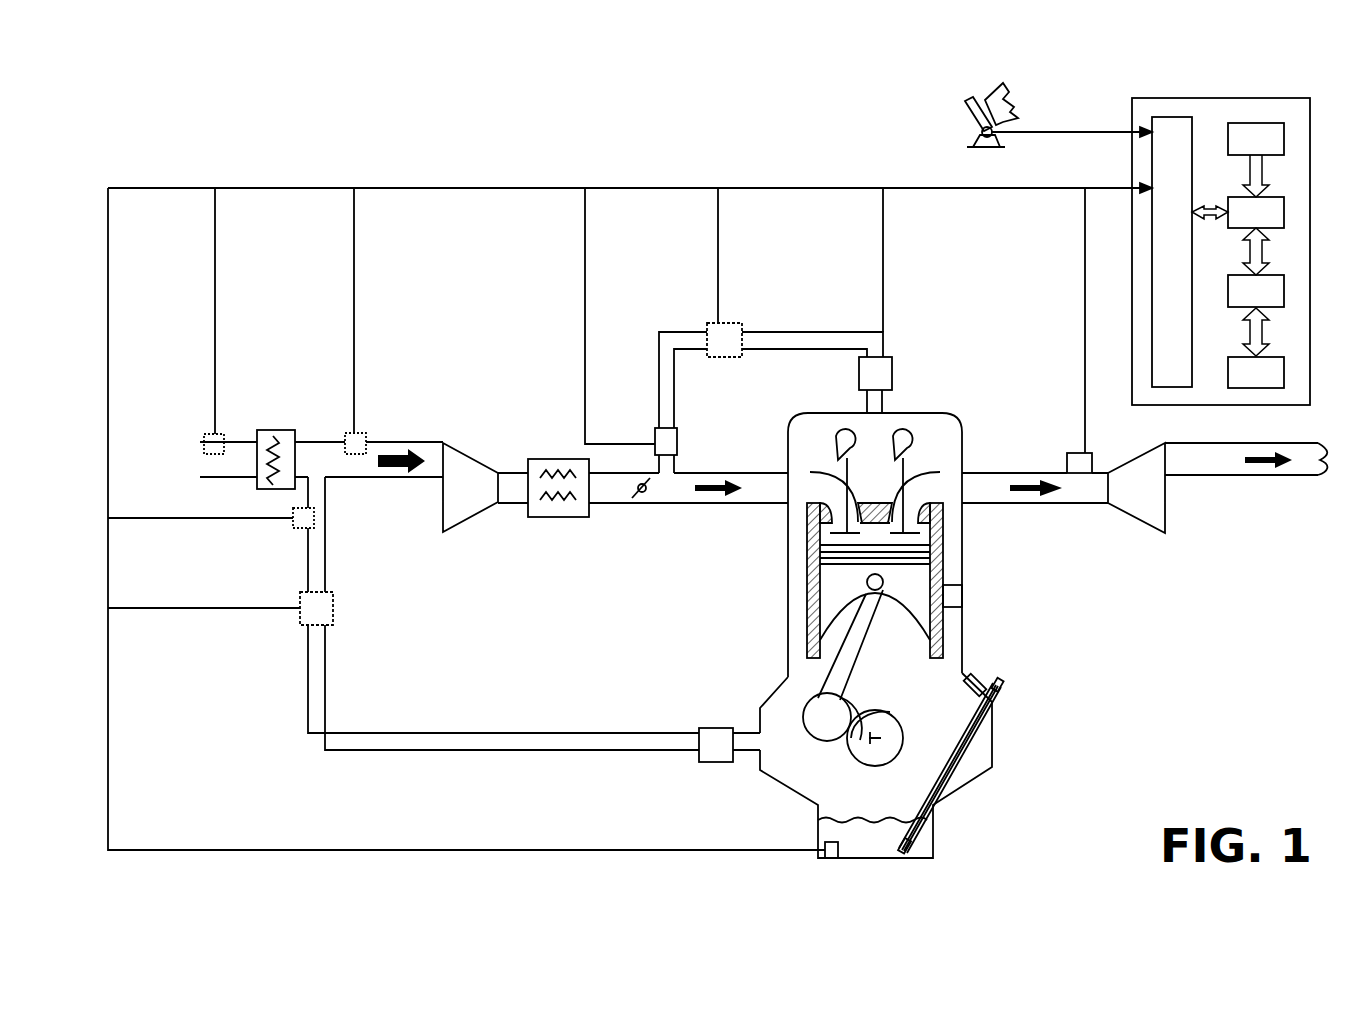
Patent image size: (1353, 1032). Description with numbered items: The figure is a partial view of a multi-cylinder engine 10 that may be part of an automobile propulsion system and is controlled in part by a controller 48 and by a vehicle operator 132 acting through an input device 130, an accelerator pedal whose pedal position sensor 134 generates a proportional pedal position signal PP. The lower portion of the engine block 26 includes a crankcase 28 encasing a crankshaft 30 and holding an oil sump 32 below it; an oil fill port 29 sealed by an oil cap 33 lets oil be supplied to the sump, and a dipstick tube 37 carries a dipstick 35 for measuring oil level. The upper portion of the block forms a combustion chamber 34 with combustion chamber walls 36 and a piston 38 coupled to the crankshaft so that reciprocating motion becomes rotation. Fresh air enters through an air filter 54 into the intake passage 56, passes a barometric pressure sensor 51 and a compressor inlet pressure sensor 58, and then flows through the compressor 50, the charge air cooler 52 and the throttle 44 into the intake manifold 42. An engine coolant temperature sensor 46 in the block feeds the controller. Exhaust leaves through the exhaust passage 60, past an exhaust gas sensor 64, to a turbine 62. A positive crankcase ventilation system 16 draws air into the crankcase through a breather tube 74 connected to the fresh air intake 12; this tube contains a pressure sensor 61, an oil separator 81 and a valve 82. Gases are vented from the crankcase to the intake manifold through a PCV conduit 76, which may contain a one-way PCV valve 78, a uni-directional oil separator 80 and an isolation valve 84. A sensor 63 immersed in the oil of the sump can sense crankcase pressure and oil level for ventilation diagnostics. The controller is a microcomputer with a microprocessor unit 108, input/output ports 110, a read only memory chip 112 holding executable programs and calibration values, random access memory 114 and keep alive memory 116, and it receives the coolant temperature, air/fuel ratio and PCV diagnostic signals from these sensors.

The engine 10 is at (340, 134).
The fresh air intake 12 is at (404, 478).
The positive crankcase ventilation system 16 is at (810, 314).
The engine block 26 is at (1034, 800).
The crankcase 28 is at (990, 767).
The oil fill port 29 is at (965, 678).
The crankshaft 30 is at (824, 722).
The oil sump 32 is at (933, 845).
The oil cap 33 is at (996, 680).
The combustion chamber 34 is at (882, 547).
The dipstick 35 is at (1002, 687).
The combustion chamber walls 36 is at (938, 557).
The dipstick tube 37 is at (967, 733).
The piston 38 is at (832, 582).
The intake manifold 42 is at (764, 472).
The throttle 44 is at (645, 496).
The engine coolant temperature sensor 46 is at (952, 597).
The controller 48 is at (1257, 98).
The compressor 50 is at (485, 487).
The barometric pressure sensor 51 is at (207, 434).
The charge air cooler 52 is at (578, 457).
The air filter 54 is at (262, 430).
The intake passage 56 is at (198, 461).
The compressor inlet pressure sensor 58 is at (350, 432).
The exhaust passage 60 is at (1020, 472).
The pressure sensor 61 is at (315, 520).
The turbine 62 is at (1217, 488).
The sensor 63 is at (825, 845).
The exhaust gas sensor 64 is at (1094, 466).
The breather tube 74 is at (582, 749).
The PCV conduit 76 is at (660, 332).
The PCV valve 78 is at (653, 428).
The oil separator 80 is at (894, 370).
The oil separator 81 is at (709, 763).
The valve 82 is at (333, 607).
The valve 84 is at (720, 321).
The microprocessor unit 108 is at (1286, 213).
The input/output ports 110 is at (1175, 128).
The read only memory chip 112 is at (1286, 141).
The random access memory 114 is at (1286, 292).
The keep alive memory 116 is at (1286, 373).
The input device 130 is at (968, 112).
The vehicle operator 132 is at (1012, 100).
The pedal position sensor 134 is at (982, 130).